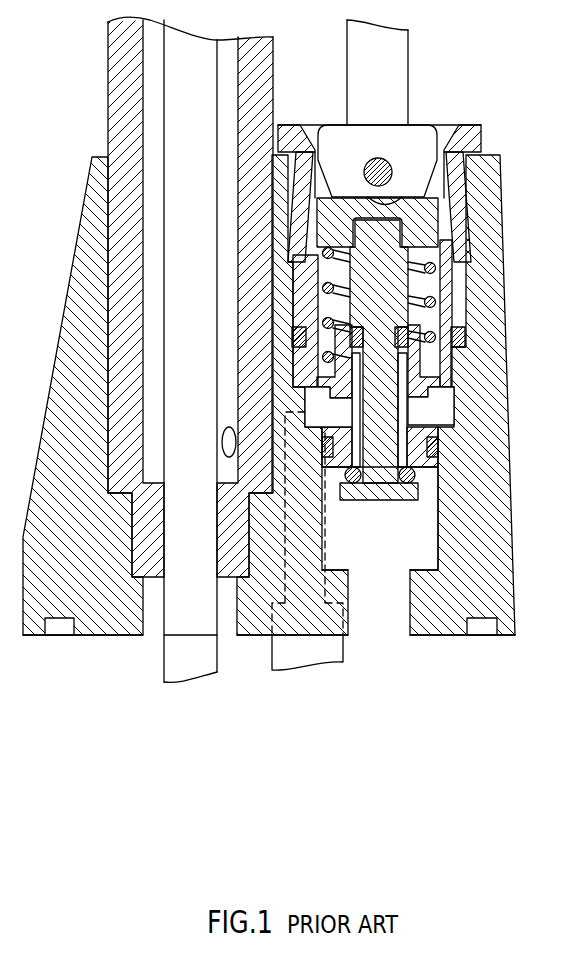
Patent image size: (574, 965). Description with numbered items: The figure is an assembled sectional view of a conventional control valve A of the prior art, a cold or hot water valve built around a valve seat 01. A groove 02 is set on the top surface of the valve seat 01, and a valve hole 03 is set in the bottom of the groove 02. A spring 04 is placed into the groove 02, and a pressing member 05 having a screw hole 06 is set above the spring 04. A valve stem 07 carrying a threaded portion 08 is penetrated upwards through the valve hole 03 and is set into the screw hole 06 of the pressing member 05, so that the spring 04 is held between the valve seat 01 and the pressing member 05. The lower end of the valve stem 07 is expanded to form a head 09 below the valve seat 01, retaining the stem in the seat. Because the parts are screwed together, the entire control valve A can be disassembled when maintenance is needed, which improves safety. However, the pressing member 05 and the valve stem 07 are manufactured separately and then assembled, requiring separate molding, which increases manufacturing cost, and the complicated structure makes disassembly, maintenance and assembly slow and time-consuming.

The valve seat 01 is at (462, 310).
The groove 02 is at (457, 340).
The valve hole 03 is at (401, 392).
The spring 04 is at (447, 373).
The pressing member 05 is at (422, 221).
The screw hole 06 is at (405, 241).
The valve stem 07 is at (382, 427).
The threaded portion 08 is at (385, 207).
The head 09 is at (418, 496).
The control valve A is at (468, 290).